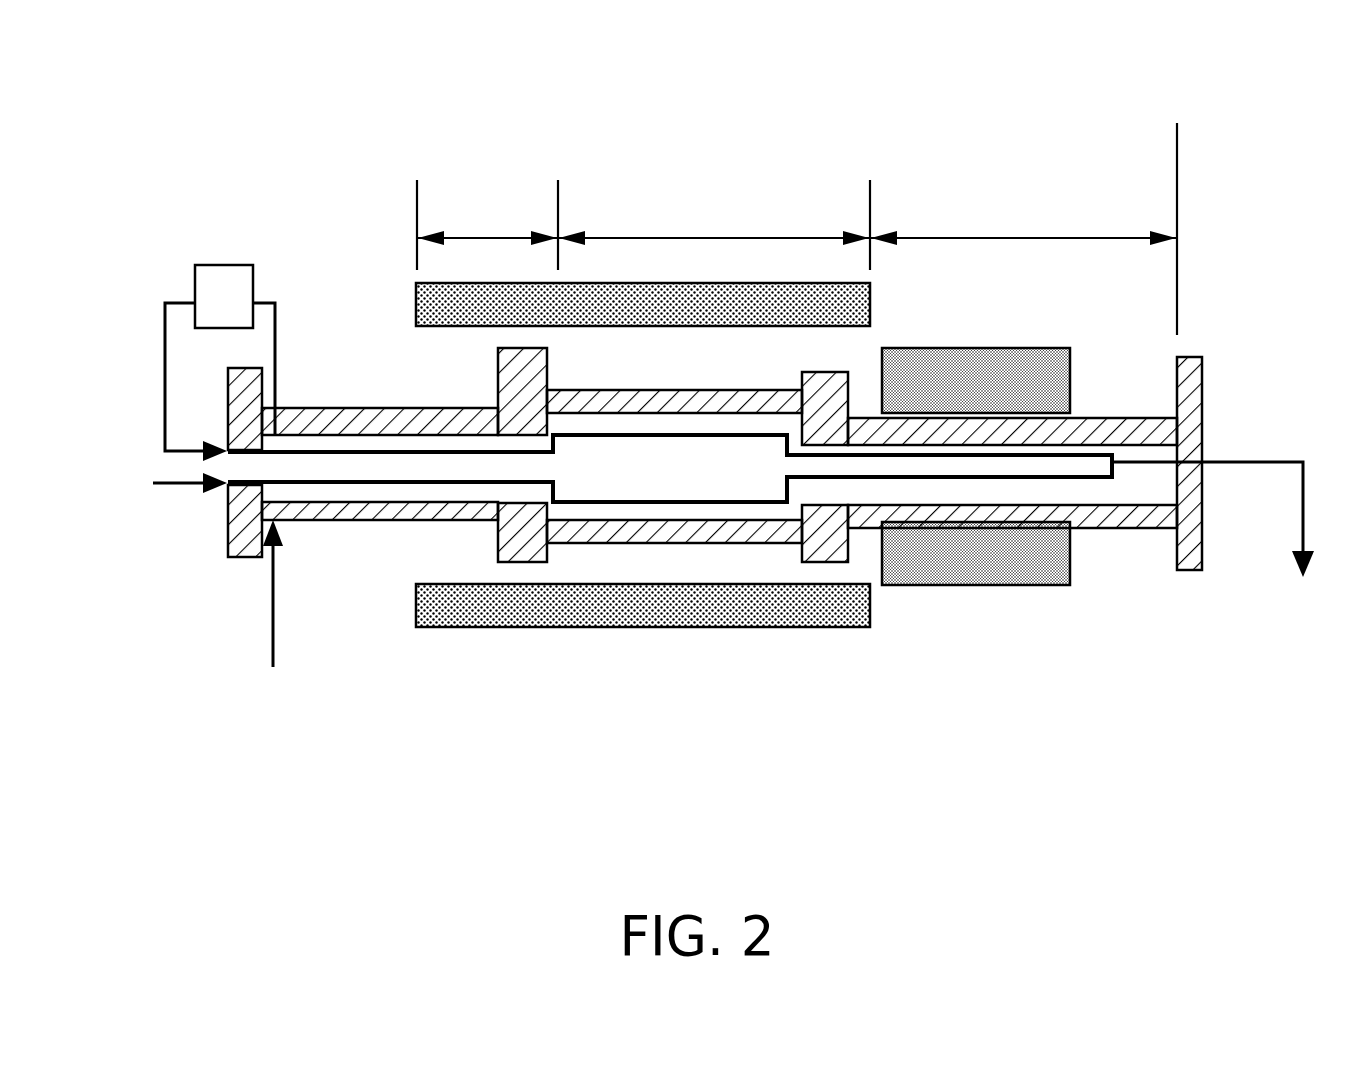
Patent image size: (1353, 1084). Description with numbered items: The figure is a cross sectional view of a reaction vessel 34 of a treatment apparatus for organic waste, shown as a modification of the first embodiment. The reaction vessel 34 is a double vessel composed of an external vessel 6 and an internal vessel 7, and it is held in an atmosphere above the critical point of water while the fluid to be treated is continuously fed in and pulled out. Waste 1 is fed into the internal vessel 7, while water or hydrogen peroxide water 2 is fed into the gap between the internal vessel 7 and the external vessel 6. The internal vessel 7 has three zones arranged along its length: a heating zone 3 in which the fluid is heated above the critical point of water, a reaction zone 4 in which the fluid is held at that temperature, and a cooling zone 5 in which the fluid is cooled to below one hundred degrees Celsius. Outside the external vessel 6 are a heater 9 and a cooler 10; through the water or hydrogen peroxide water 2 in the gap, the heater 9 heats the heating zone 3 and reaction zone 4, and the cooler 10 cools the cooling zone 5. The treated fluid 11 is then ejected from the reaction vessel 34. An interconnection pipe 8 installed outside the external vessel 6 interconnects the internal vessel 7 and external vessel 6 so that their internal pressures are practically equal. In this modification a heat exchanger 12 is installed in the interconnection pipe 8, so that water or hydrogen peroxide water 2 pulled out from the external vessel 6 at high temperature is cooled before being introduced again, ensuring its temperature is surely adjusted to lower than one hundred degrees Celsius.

The reaction vessel 34 is at (870, 77).
The waste 1 is at (174, 483).
The water or hydrogen peroxide water 2 is at (273, 620).
The heating zone 3 is at (493, 235).
The reaction zone 4 is at (682, 235).
The cooling zone 5 is at (998, 237).
The external vessel 6 is at (298, 407).
The internal vessel 7 is at (328, 462).
The interconnection pipe 8 is at (162, 362).
The heater 9 is at (623, 628).
The cooler 10 is at (948, 587).
The treated fluid 11 is at (1213, 547).
The heat exchanger 12 is at (212, 263).